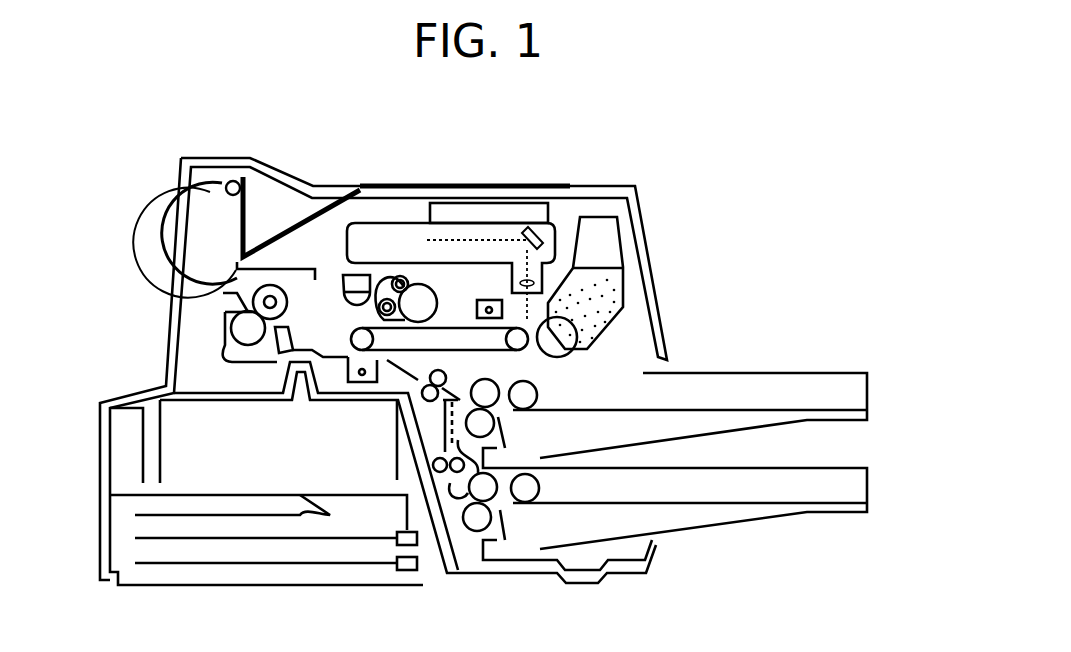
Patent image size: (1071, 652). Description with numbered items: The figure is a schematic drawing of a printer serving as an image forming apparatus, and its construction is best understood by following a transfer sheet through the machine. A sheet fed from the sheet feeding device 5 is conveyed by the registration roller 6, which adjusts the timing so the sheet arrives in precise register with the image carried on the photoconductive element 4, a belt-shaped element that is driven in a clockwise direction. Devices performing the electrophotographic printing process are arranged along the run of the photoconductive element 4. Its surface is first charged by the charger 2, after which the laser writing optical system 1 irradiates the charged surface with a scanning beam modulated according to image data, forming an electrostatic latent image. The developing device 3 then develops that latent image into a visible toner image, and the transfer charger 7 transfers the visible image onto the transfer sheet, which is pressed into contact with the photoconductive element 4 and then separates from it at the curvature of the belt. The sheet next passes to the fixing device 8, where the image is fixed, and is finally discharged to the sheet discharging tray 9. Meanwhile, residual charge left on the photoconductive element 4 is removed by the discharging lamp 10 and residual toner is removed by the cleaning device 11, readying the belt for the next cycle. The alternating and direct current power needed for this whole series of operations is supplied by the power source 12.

The laser writing optical system 1 is at (500, 233).
The charger 2 is at (477, 313).
The developing device 3 is at (600, 287).
The photoconductive element 4 is at (500, 353).
The sheet feeding device 5 is at (728, 431).
The registration roller 6 is at (421, 395).
The transfer charger 7 is at (347, 381).
The fixing device 8 is at (243, 289).
The sheet discharging tray 9 is at (262, 197).
The discharging lamp 10 is at (361, 276).
The cleaning device 11 is at (405, 273).
The power source 12 is at (180, 450).